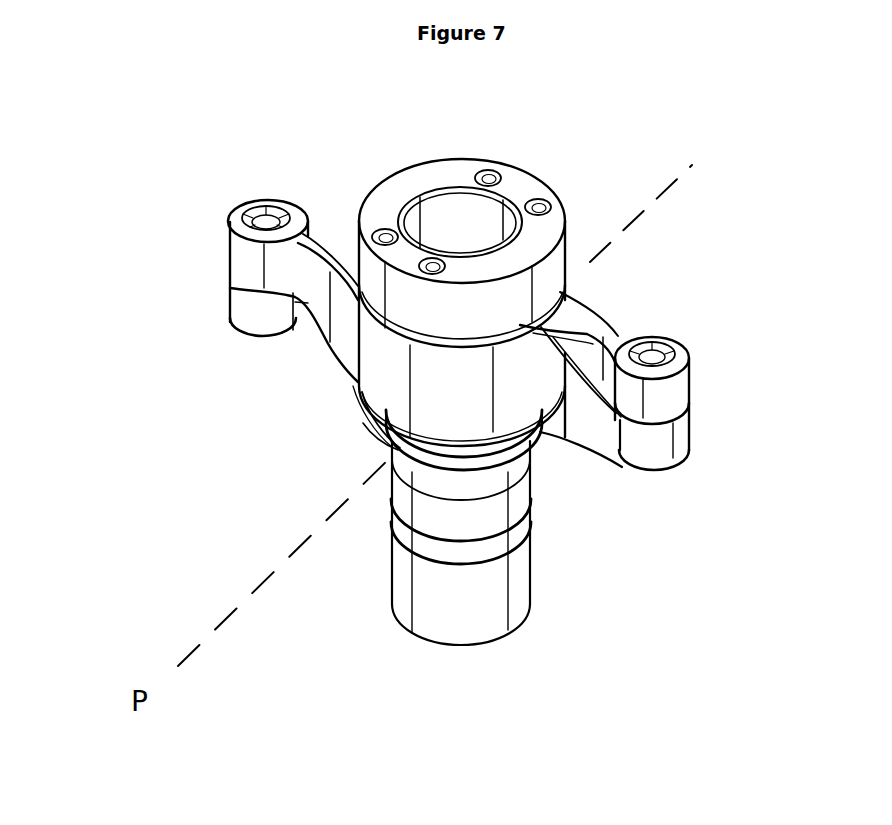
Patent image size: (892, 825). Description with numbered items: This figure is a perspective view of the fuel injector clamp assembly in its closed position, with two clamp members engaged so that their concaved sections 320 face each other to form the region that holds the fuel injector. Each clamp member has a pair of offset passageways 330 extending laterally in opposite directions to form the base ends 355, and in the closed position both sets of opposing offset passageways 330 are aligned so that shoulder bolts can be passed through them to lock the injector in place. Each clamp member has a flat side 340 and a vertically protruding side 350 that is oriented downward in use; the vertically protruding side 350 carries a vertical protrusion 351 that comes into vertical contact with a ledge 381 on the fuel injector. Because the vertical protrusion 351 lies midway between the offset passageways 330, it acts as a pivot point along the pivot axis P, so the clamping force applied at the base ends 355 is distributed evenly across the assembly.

The concaved section 320 is at (358, 382).
The offset passageway 330 is at (262, 210).
The flat side 340 is at (317, 250).
The vertically protruding side 350 is at (388, 445).
The vertical protrusion 351 is at (390, 457).
The base end 355 is at (228, 258).
The ledge 381 is at (362, 423).